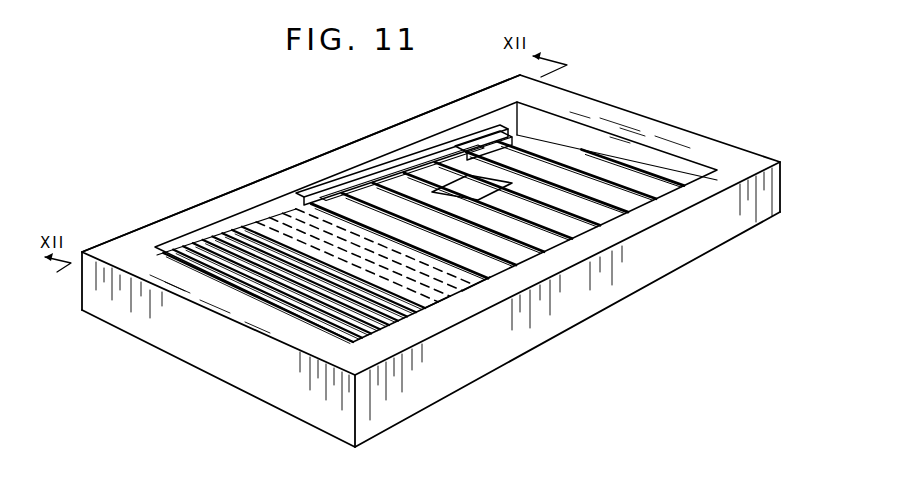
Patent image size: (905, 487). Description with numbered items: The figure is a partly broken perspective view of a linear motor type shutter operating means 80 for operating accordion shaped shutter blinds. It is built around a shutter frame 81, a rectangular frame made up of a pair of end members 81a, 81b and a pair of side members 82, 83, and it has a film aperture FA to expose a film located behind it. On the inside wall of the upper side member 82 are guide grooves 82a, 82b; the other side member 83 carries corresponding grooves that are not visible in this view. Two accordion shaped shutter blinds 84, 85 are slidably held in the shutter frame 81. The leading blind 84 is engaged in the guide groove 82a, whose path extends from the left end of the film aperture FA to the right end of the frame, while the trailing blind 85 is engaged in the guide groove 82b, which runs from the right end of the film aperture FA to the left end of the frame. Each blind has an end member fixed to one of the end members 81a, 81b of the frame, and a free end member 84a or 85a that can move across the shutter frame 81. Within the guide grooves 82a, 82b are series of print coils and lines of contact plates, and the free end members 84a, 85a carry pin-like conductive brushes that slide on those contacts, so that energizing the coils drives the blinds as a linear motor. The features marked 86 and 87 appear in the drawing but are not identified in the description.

The linear motor type shutter operating means 80 is at (323, 150).
The shutter frame 81 is at (598, 97).
The end member 81a is at (690, 140).
The end member 81b is at (213, 302).
The side member 82 is at (387, 128).
The guide groove 82a is at (483, 150).
The guide groove 82b is at (427, 150).
The side member 83 is at (690, 193).
The shutter blind 84 is at (588, 232).
The end member 84a is at (473, 287).
The shutter blind 85 is at (292, 305).
The end member 85a is at (443, 300).
The hidden groove 86 is at (303, 225).
The hidden groove 87 is at (247, 218).
The film aperture FA is at (477, 180).